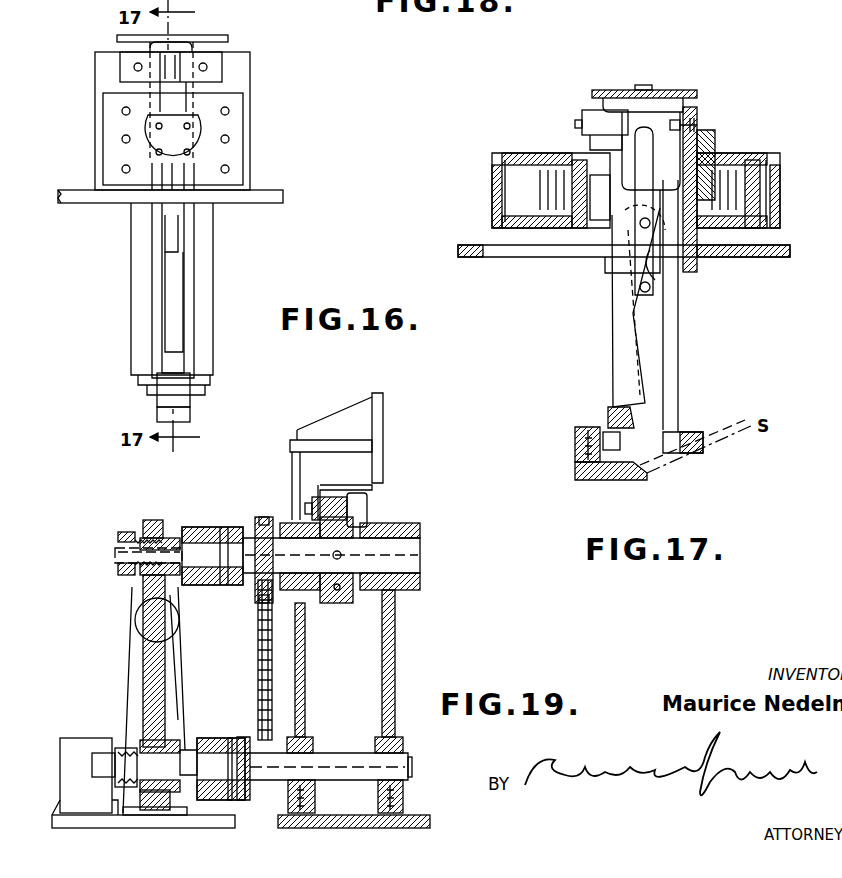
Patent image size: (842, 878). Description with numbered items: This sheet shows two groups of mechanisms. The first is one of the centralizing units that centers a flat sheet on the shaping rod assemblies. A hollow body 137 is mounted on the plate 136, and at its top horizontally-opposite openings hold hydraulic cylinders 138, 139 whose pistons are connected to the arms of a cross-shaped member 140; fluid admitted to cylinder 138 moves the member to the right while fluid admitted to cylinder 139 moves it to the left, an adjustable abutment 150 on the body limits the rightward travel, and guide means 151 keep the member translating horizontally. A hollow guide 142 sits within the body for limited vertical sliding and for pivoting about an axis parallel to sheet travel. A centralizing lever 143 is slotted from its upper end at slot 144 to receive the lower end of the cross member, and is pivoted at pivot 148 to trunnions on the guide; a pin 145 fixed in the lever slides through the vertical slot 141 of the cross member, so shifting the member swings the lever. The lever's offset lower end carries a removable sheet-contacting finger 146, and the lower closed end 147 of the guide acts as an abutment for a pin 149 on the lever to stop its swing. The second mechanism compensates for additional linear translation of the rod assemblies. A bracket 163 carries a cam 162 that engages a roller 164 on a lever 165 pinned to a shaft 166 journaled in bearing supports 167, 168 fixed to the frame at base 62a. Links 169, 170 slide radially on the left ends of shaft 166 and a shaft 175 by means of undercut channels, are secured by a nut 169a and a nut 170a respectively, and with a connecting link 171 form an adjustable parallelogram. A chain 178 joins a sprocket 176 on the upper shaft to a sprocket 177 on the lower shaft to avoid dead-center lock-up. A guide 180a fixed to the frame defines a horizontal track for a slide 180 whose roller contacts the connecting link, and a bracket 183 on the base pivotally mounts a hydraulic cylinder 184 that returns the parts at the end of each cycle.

In FIG. 16, the plate 136 is at (283, 197).
In FIG. 17, the plate 136 is at (472, 258).
In FIG. 17, the hollow body 137 is at (700, 145).
In FIG. 16, the hydraulic cylinder 138 is at (196, 140).
In FIG. 17, the hydraulic cylinder 138 is at (555, 160).
In FIG. 17, the hydraulic cylinder 139 is at (740, 172).
In FIG. 16, the cross-shaped member 140 is at (168, 226).
In FIG. 17, the cross-shaped member 140 is at (618, 196).
In FIG. 17, the vertical slot 141 is at (660, 260).
In FIG. 16, the hollow cylinder or guide 142 is at (207, 276).
In FIG. 17, the hollow cylinder or guide 142 is at (628, 330).
In FIG. 16, the centralizing lever 143 is at (180, 407).
In FIG. 17, the centralizing lever 143 is at (608, 410).
In FIG. 16, the slot 144 is at (165, 295).
In FIG. 17, the slot 144 is at (665, 340).
In FIG. 17, the pin 145 is at (652, 288).
In FIG. 16, the sheet-contacting finger 146 is at (160, 412).
In FIG. 17, the sheet-contacting finger 146 is at (612, 480).
In FIG. 16, the lower closed end 147 is at (205, 342).
In FIG. 17, the lower closed end 147 is at (668, 440).
In FIG. 17, the pivot 148 is at (652, 220).
In FIG. 17, the pin 149 is at (580, 420).
In FIG. 17, the adjustable abutment 150 is at (686, 110).
In FIG. 16, the guide means 151 is at (170, 73).
In FIG. 17, the guide means 151 is at (590, 118).
In FIG. 19, the cam 162 is at (352, 493).
In FIG. 19, the bracket 163 is at (379, 440).
In FIG. 19, the roller 164 is at (358, 512).
In FIG. 19, the lever 165 is at (337, 603).
In FIG. 19, the shaft 166 is at (408, 562).
In FIG. 19, the bearing support 167 is at (305, 670).
In FIG. 19, the bearing support 168 is at (395, 646).
In FIG. 19, the link 169 is at (222, 525).
In FIG. 19, the nut 169a is at (160, 527).
In FIG. 19, the link 170 is at (236, 800).
In FIG. 19, the nut 170a is at (190, 740).
In FIG. 19, the connecting link 171 is at (145, 673).
In FIG. 19, the shaft 175 is at (395, 771).
In FIG. 19, the sprocket 176 is at (262, 518).
In FIG. 19, the sprocket 177 is at (246, 735).
In FIG. 19, the chain 178 is at (262, 650).
In FIG. 19, the slide 180 is at (118, 743).
In FIG. 19, the guide 180a is at (73, 757).
In FIG. 19, the bracket 183 is at (172, 633).
In FIG. 19, the hydraulic cylinder 184 is at (137, 622).
In FIG. 19, the base 62a is at (398, 812).